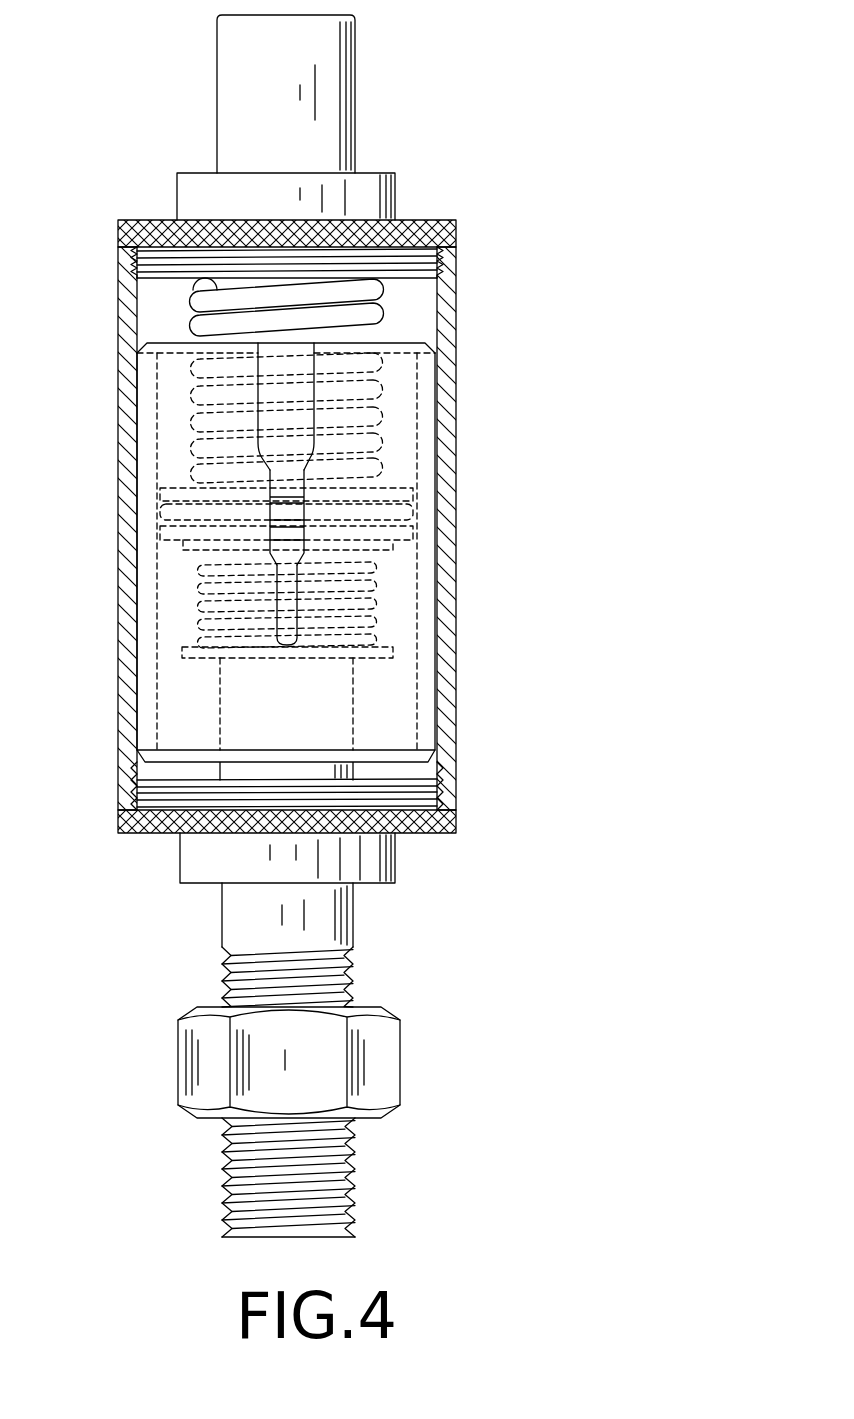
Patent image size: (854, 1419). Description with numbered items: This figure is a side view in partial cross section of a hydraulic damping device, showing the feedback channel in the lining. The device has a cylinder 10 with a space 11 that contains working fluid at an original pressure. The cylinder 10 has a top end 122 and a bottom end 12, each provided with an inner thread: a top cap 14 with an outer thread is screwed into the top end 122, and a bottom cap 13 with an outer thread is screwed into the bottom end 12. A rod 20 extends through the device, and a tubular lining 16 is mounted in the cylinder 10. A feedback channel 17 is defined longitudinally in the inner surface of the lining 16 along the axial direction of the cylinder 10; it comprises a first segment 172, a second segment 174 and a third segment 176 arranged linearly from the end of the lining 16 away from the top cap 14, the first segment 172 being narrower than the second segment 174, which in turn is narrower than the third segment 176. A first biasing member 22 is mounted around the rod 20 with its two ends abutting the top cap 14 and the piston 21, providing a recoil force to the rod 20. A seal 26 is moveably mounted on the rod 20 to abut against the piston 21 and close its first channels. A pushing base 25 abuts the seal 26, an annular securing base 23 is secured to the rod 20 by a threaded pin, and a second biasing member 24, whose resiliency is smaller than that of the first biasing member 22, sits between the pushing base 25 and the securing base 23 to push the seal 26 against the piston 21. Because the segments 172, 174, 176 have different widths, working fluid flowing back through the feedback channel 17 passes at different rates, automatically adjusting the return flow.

The cylinder 10 is at (470, 348).
The space 11 is at (422, 311).
The bottom end 12 is at (453, 767).
The bottom cap 13 is at (461, 820).
The top cap 14 is at (157, 230).
The tubular lining 16 is at (155, 380).
The feedback channel 17 is at (273, 534).
The rod 20 is at (342, 926).
The piston 21 is at (419, 495).
The first biasing member 22 is at (373, 313).
The annular securing base 23 is at (373, 652).
The second biasing member 24 is at (391, 628).
The pushing base 25 is at (393, 558).
The seal 26 is at (400, 543).
The top end 122 is at (436, 261).
The first segment 172 is at (285, 646).
The second segment 174 is at (275, 520).
The third segment 176 is at (267, 407).